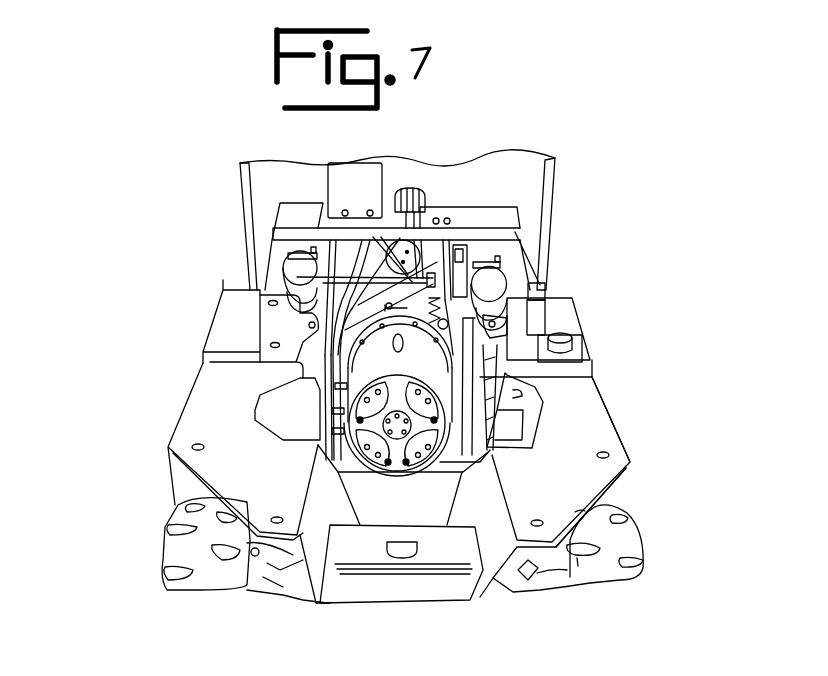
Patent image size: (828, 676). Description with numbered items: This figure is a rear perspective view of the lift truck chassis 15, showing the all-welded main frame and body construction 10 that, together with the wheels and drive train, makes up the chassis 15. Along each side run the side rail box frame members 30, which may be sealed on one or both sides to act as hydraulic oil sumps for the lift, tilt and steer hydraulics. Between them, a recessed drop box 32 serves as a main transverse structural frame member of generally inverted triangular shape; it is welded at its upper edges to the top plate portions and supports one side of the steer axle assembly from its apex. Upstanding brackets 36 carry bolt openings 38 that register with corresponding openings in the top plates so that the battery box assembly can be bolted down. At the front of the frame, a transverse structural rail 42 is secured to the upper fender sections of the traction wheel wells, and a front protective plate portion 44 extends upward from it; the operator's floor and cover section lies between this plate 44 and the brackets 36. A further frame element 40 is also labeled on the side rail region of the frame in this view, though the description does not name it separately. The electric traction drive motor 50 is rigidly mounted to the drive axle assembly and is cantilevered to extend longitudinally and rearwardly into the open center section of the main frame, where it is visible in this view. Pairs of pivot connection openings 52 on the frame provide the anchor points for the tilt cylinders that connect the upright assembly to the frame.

The main frame and body construction 10 is at (610, 492).
The chassis 15 is at (157, 494).
The side rail box frame members 30 is at (290, 487).
The recessed drop box 32 is at (416, 509).
The upstanding brackets 36 is at (540, 320).
The bolt openings 38 is at (533, 330).
The plate edge 40 is at (603, 453).
The transverse structural rail 42 is at (428, 228).
The front protective plate portion 44 is at (528, 190).
The electric traction drive motor 50 is at (432, 364).
The pivot connection openings 52 is at (305, 253).